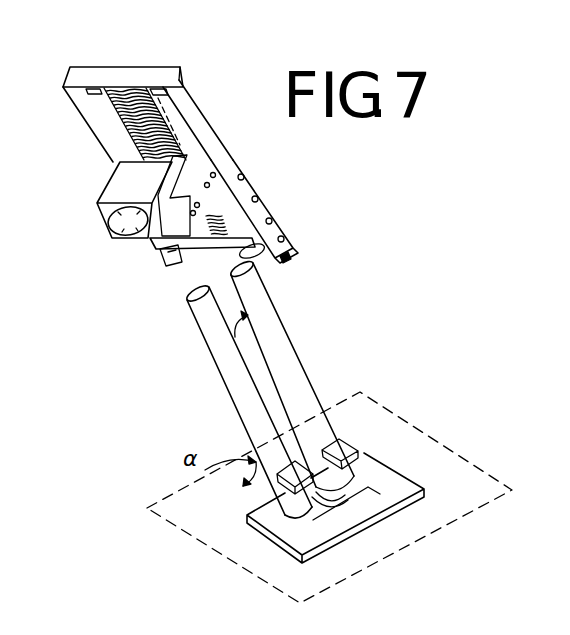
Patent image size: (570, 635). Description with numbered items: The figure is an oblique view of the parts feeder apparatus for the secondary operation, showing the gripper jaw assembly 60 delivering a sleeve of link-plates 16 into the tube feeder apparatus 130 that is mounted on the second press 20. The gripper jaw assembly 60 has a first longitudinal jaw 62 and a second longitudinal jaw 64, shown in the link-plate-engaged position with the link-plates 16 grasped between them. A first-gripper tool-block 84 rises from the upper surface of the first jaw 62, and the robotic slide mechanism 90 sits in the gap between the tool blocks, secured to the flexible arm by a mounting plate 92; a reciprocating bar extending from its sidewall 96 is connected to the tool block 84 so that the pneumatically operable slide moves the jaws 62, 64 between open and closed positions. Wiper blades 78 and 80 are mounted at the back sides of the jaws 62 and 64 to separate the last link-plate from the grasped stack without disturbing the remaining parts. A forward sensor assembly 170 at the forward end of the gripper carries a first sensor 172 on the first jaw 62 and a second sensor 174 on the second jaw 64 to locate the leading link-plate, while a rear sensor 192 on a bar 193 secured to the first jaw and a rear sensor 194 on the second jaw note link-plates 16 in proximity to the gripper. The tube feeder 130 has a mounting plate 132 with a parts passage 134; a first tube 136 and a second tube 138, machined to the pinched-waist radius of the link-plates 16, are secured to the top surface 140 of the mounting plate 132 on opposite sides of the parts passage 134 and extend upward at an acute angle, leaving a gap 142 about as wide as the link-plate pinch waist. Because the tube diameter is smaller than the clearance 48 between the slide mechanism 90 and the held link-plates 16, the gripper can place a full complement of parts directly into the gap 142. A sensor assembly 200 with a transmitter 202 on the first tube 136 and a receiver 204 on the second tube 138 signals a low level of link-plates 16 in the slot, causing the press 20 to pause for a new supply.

The link-plates 16 is at (120, 77).
The first sensor 172 is at (158, 87).
The forward sensor assembly 170 is at (183, 82).
The first longitudinal jaw 62 is at (190, 99).
The second sensor 174 is at (90, 95).
The second longitudinal jaw 64 is at (88, 133).
The gripper jaw assembly 60 is at (270, 134).
The first-gripper tool-block 84 is at (221, 184).
The clearance 48 is at (11, 185).
The robotic slide mechanism 90 is at (99, 212).
The mounting plate 92 is at (125, 240).
The sidewall 96 is at (158, 240).
The bar 193 is at (284, 236).
The sensor 192 is at (293, 257).
The sensor 194 is at (169, 258).
The wiper blade 80 is at (185, 246).
The wiper blade 78 is at (275, 267).
The gap 142 is at (235, 337).
The second tube 138 is at (316, 383).
The first tube 136 is at (231, 403).
The transmitter 202 is at (299, 467).
The sensor assembly 200 is at (349, 434).
The tube feeder apparatus 130 is at (459, 418).
The second press 20 is at (487, 485).
The receiver 204 is at (346, 500).
The parts passage 134 is at (378, 488).
The top surface 140 is at (300, 528).
The mounting plate 132 is at (358, 529).